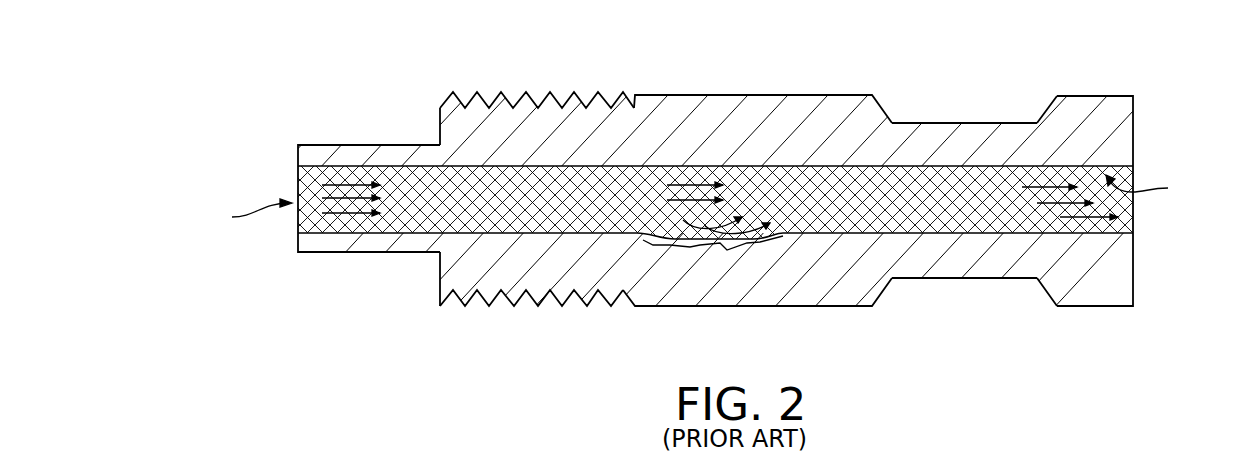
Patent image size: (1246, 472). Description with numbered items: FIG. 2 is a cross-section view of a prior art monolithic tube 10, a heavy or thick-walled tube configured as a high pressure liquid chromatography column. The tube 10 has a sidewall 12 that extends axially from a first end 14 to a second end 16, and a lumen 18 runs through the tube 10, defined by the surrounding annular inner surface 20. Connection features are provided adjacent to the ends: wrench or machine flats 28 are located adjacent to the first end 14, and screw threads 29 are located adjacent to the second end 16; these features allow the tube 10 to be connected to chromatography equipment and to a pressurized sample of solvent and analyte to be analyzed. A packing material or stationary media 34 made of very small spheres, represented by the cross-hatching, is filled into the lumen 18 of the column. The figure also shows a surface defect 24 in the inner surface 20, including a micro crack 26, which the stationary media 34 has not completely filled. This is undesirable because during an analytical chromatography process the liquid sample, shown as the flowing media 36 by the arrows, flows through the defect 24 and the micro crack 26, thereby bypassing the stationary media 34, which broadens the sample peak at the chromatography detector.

The monolithic tube 10 is at (701, 175).
The sidewall 12 is at (807, 107).
The first end 14 is at (1133, 123).
The second end 16 is at (297, 152).
The lumen 18 is at (247, 214).
The inner surface 20 is at (1152, 188).
The surface defect 24 is at (731, 245).
The micro crack 26 is at (622, 290).
The wrench or machine flats 28 is at (957, 123).
The screw threads 29 is at (535, 95).
The stationary media 34 is at (882, 187).
The flowing media 36 is at (343, 172).